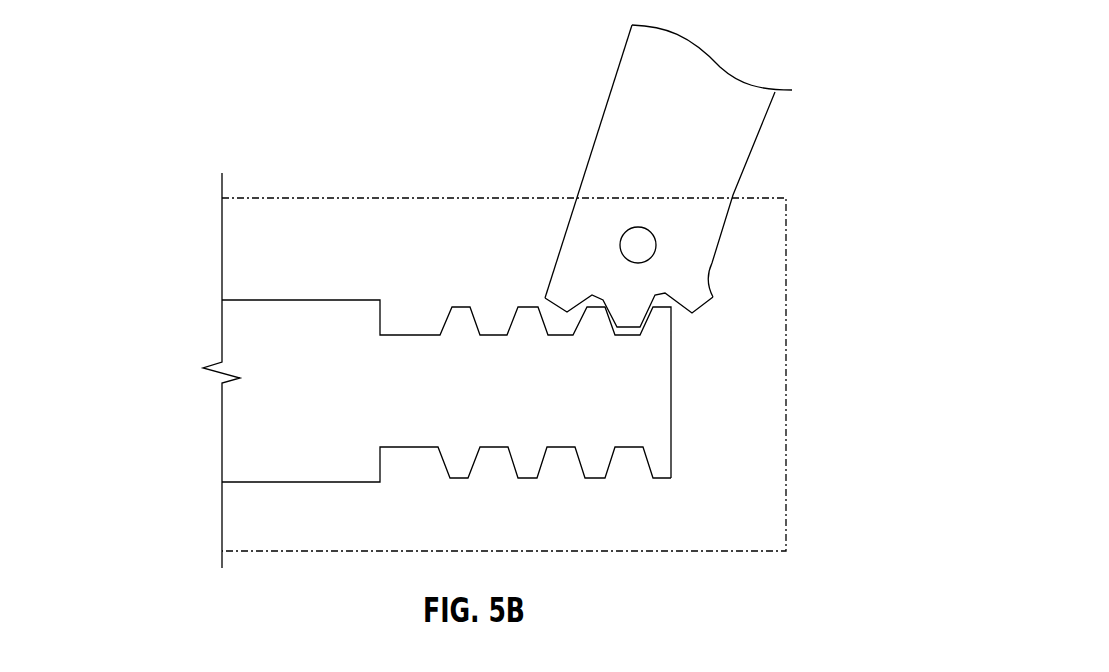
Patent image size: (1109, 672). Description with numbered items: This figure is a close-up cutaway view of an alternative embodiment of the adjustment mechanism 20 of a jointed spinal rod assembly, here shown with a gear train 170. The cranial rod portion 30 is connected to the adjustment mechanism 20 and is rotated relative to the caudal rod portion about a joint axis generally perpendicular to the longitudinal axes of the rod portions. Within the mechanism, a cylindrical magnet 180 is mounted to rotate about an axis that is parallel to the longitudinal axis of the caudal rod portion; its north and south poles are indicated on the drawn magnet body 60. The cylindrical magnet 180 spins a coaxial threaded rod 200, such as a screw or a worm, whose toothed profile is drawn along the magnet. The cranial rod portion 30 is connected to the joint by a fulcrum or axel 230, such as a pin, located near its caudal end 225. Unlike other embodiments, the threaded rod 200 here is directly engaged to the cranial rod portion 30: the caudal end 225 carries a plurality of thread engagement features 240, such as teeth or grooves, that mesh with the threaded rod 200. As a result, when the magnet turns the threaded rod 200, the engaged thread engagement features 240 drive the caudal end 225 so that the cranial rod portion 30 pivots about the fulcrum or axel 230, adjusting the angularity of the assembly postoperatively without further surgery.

The adjustment mechanism 20 is at (870, 306).
The cranial rod portion 30 is at (765, 112).
The magnet 60 is at (242, 422).
The gear train 170 is at (695, 477).
The cylindrical magnet 180 is at (154, 370).
The threaded rod 200 is at (440, 468).
The caudal end 225 is at (695, 240).
The fulcrum or axel 230 is at (630, 238).
The thread engagement features 240 is at (698, 295).